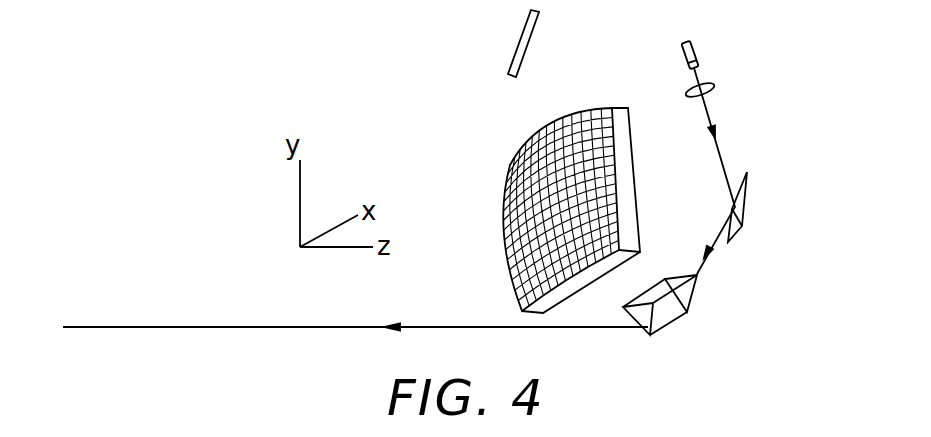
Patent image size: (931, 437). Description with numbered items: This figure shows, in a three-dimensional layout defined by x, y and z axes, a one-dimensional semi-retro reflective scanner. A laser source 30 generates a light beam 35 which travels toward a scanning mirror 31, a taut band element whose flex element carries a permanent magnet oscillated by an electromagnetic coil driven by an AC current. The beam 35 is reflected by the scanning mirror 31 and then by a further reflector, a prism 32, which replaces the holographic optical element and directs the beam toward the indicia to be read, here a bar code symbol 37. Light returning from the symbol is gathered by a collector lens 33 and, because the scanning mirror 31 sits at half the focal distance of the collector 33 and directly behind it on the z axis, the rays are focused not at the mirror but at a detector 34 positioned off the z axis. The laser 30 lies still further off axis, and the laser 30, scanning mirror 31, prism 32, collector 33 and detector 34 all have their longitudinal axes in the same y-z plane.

The laser source 30 is at (682, 48).
The scanning mirror 31 is at (742, 222).
The prism 32 is at (697, 286).
The collector lens 33 is at (509, 165).
The detector 34 is at (523, 57).
The light beam 35 is at (707, 105).
The bar code symbol 37 is at (337, 310).